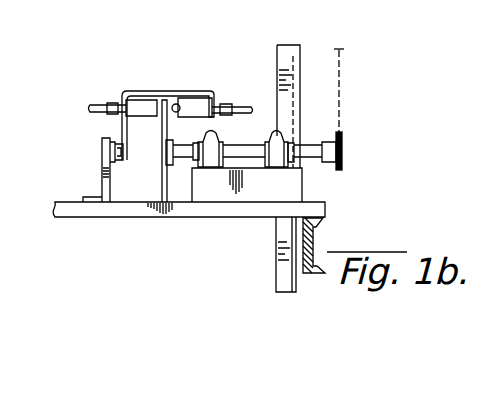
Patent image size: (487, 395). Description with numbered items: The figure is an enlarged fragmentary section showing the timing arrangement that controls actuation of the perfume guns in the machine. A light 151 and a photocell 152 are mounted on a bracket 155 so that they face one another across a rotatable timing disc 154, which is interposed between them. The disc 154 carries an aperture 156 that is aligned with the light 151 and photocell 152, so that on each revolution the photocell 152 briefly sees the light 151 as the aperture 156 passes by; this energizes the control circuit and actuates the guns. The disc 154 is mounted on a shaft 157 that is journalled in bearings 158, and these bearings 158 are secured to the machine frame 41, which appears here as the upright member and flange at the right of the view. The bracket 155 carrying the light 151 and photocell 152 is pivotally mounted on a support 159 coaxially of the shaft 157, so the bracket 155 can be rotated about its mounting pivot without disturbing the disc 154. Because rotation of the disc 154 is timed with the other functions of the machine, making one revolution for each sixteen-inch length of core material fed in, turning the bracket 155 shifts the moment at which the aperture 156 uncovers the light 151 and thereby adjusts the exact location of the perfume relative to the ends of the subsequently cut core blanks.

The machine frame 41 is at (315, 240).
The light 151 is at (182, 100).
The photocell 152 is at (141, 103).
The timing disc 154 is at (163, 178).
The bracket 155 is at (194, 55).
The aperture 156 is at (157, 110).
The shaft 157 is at (235, 147).
The bearings 158 is at (212, 165).
The support 159 is at (103, 176).